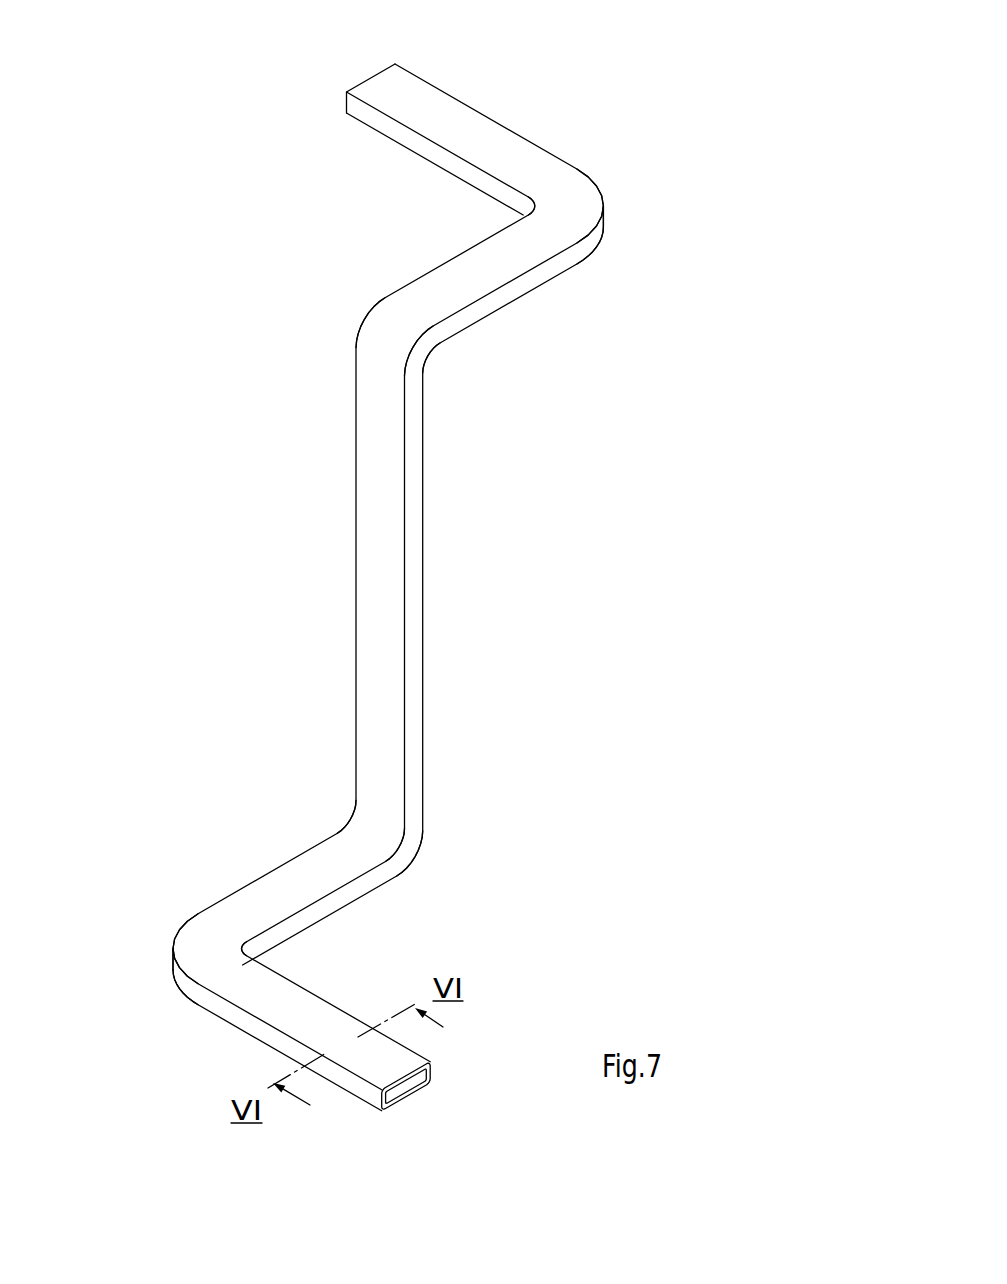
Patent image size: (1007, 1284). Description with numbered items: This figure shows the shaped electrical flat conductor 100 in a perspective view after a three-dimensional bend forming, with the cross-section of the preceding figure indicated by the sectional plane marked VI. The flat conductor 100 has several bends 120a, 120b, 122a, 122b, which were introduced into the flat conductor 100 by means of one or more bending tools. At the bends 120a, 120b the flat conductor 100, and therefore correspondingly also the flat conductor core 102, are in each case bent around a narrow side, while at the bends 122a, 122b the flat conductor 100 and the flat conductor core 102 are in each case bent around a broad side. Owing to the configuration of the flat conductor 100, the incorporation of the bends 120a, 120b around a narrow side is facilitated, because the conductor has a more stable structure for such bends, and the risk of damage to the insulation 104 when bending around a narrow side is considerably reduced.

The flat conductor 100 is at (551, 78).
The bend around a narrow side 120a is at (582, 197).
The bend around a narrow side 120b is at (206, 947).
The bend around a broad side 122a is at (378, 342).
The bend around a broad side 122b is at (363, 825).
The insulation 104 is at (427, 1077).
The flat conductor core 102 is at (407, 1093).